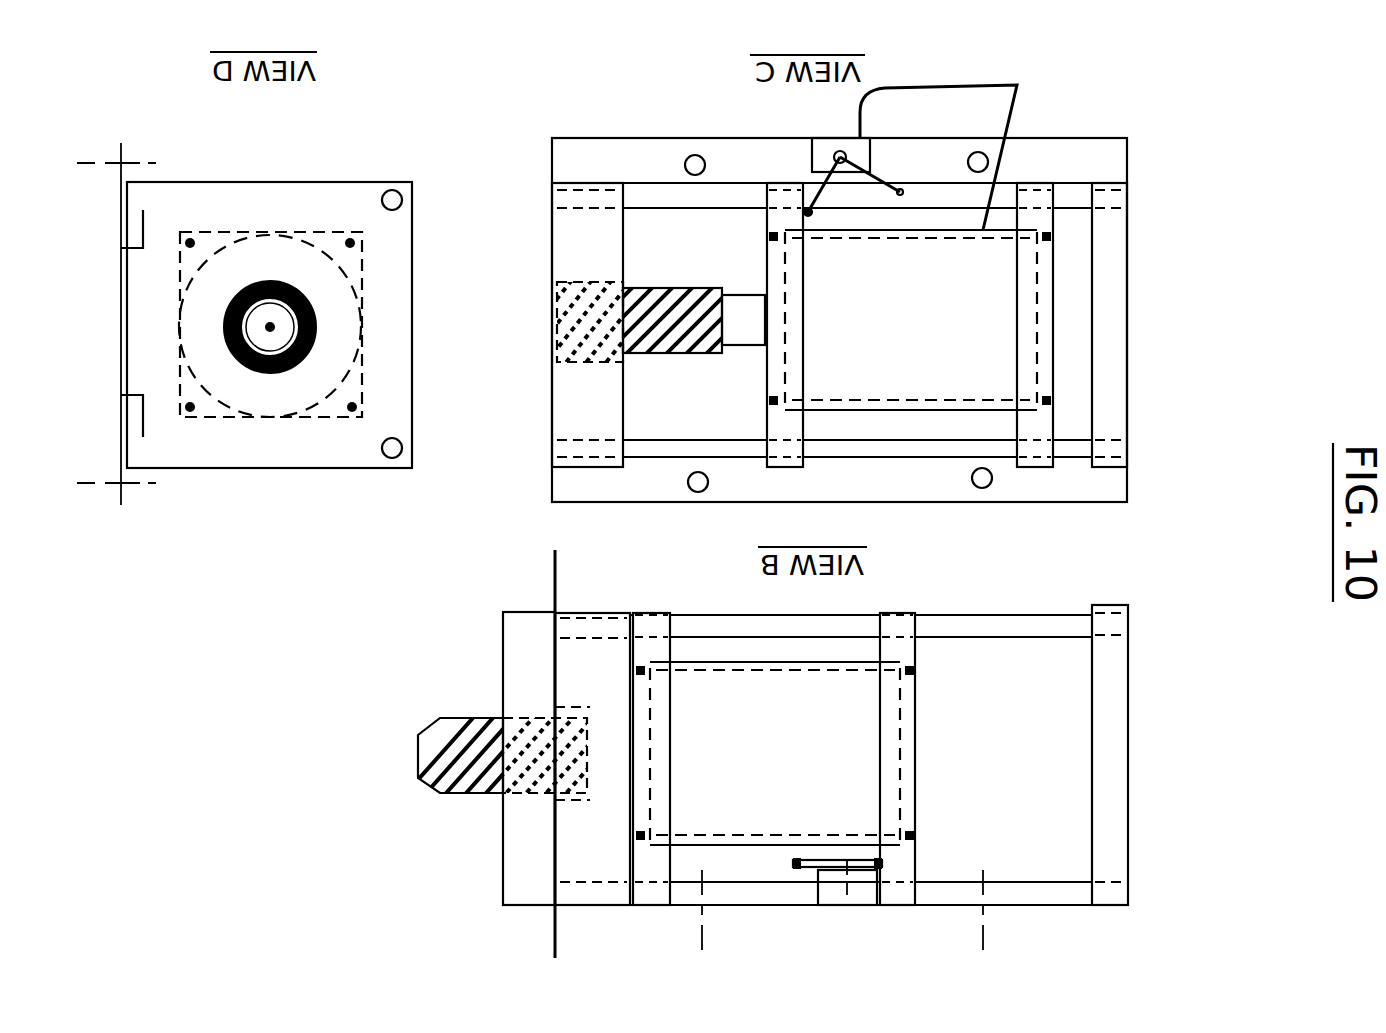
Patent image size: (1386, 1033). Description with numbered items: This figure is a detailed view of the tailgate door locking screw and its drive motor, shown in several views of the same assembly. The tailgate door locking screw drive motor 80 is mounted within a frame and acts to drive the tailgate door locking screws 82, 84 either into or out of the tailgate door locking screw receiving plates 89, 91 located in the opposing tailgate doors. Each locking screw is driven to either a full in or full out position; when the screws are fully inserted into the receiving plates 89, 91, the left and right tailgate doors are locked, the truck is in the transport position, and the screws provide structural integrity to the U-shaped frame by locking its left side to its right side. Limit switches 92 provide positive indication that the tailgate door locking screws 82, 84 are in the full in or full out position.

The tailgate door locking screw drive motor 80 is at (843, 537).
The left tailgate door locking screw 82 is at (630, 548).
The right tailgate door locking screw 84 is at (630, 548).
The tailgate door locking screw receiving plate 89 is at (513, 745).
The tailgate door locking screw receiving plate 91 is at (513, 745).
The limit switches 92 is at (870, 517).